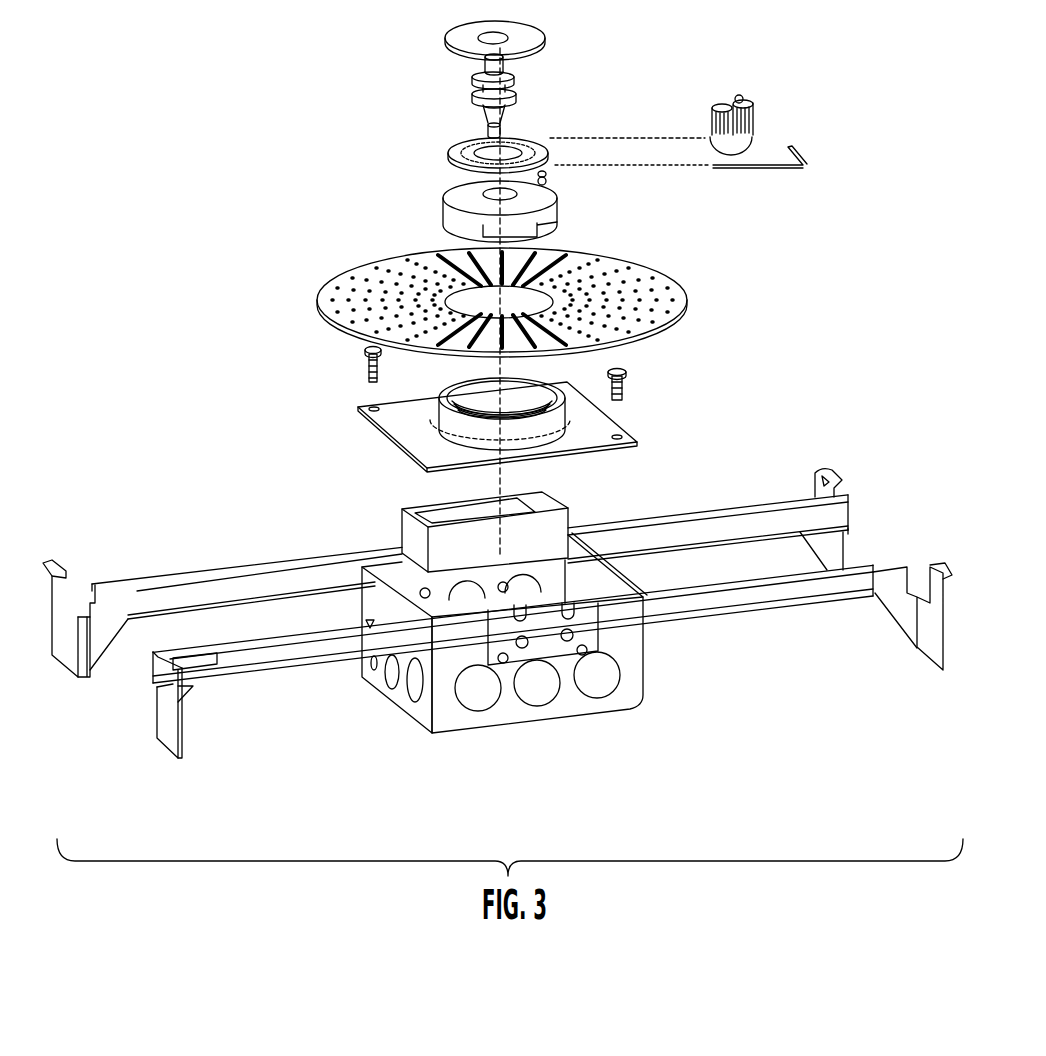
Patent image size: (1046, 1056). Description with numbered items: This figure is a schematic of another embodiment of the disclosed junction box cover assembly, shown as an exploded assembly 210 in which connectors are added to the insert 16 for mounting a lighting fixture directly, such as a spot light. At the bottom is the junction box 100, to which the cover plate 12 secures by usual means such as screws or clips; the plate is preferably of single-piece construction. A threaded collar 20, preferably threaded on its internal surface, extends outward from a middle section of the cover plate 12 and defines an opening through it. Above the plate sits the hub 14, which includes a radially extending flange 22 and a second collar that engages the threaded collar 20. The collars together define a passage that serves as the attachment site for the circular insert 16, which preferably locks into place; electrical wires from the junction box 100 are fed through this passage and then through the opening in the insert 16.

The assembly 210 is at (334, 130).
The insert 16 is at (445, 209).
The hub 14 is at (645, 270).
The radially extending flange 22 is at (320, 296).
The threaded collar 20 is at (595, 407).
The cover plate 12 is at (400, 438).
The junction box 100 is at (405, 705).